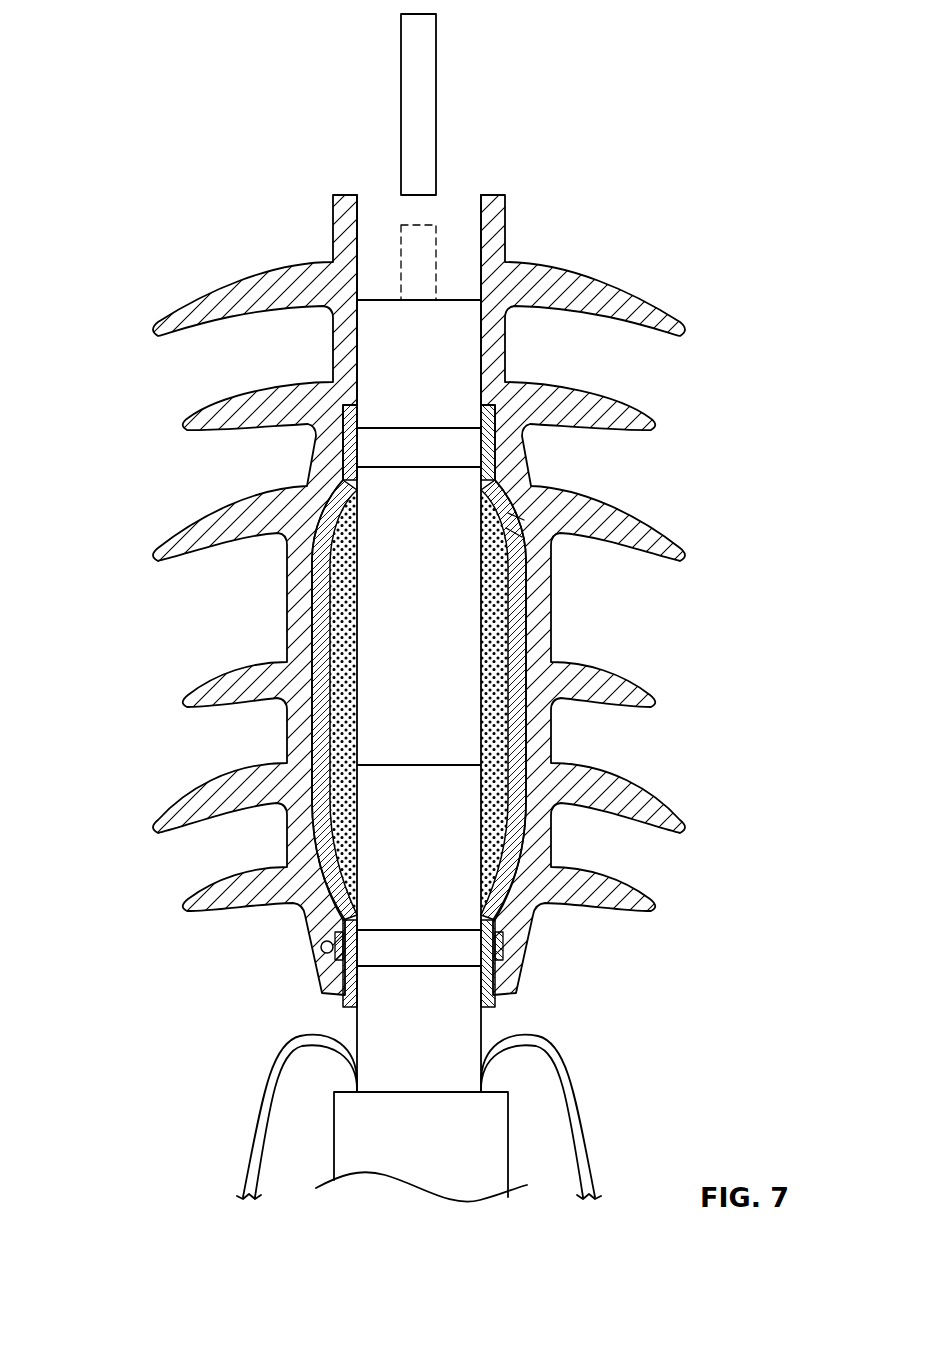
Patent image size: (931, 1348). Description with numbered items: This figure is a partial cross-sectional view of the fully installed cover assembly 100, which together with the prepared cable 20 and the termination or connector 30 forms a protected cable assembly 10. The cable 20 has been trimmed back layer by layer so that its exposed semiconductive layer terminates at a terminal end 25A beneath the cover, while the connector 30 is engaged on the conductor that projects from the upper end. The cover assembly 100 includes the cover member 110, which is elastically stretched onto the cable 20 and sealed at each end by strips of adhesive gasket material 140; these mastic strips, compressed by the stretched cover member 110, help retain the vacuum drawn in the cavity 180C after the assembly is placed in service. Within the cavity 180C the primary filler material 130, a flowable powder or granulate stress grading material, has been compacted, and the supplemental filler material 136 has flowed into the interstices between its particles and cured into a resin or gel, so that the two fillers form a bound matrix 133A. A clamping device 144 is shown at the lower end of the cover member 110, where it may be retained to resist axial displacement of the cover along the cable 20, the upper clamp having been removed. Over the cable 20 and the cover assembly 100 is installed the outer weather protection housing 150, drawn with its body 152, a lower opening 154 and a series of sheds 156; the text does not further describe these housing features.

The protected cable assembly 10 is at (148, 123).
The cable 20 is at (509, 1153).
The termination or connector 30 is at (459, 197).
The terminal end 25A is at (416, 765).
The cover assembly 100 is at (622, 229).
The cover member 110 is at (322, 848).
The primary filler material 130 is at (503, 578).
The matrix 133A is at (496, 713).
The supplemental filler material 136 is at (503, 814).
The adhesive gasket material 140 is at (417, 440).
The clamping device 144 is at (322, 945).
The outer or weather protection housing 150 is at (655, 519).
The housing body 152 is at (301, 613).
The lower opening 154 is at (428, 975).
The sheds 156 is at (193, 412).
The cavity 180C is at (509, 693).